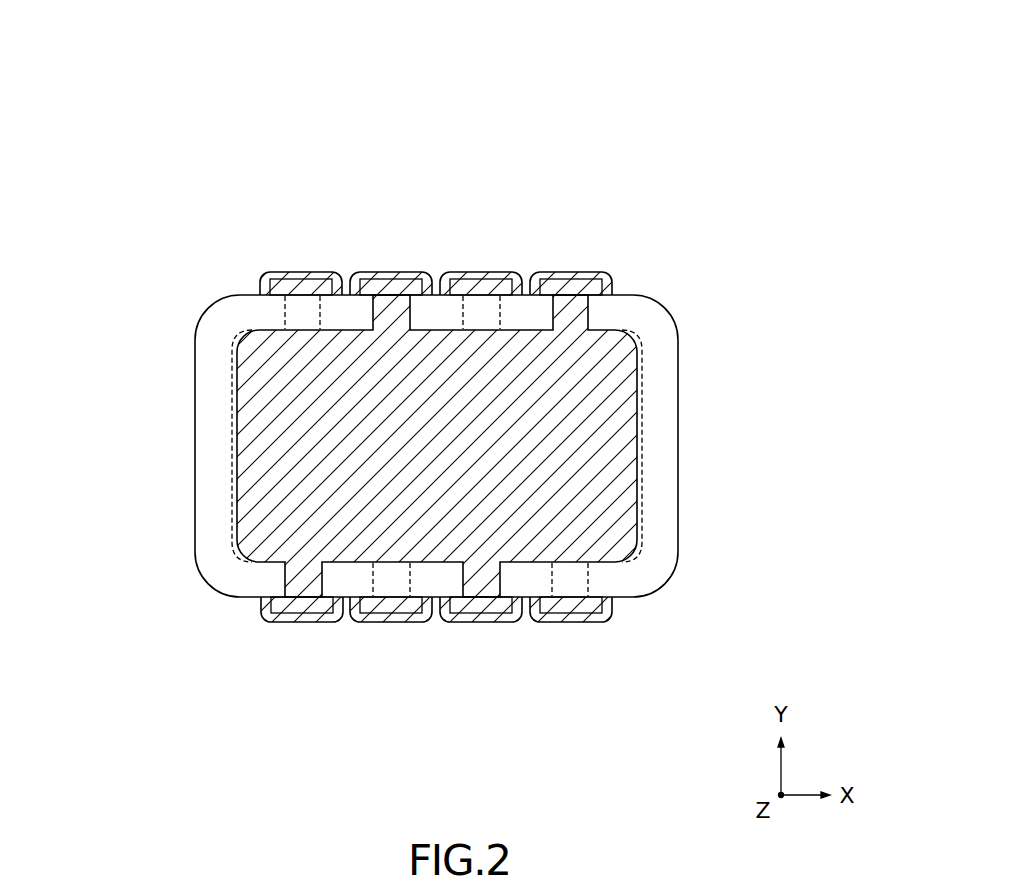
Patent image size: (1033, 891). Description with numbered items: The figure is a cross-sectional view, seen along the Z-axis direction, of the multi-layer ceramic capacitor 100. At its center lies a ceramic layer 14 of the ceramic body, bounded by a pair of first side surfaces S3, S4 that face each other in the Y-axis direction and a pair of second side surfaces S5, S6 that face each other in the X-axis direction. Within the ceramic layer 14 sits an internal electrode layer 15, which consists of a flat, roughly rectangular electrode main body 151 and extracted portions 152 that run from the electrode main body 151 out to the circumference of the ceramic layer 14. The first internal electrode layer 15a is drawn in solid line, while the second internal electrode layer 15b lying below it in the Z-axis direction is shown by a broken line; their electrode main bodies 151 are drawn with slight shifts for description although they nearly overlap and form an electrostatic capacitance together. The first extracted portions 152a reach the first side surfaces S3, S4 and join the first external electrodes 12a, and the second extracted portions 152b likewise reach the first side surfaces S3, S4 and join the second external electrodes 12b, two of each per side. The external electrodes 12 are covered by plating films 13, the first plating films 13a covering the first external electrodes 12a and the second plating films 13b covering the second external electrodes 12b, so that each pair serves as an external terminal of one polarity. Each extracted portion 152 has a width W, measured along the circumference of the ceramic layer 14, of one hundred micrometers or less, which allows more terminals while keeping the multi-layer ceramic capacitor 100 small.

The multi-layer ceramic capacitor 100 is at (683, 108).
The ceramic layer 14 is at (668, 490).
The electrode main body 151 is at (233, 375).
The extracted portion 152 is at (452, 455).
The first extracted portion 152a is at (592, 300).
The second extracted portion 152b is at (283, 308).
The internal electrode layer 15 is at (433, 446).
The first internal electrode layer 15a is at (642, 443).
The second internal electrode layer 15b is at (228, 462).
The external electrode 12 is at (494, 452).
The first external electrode 12a is at (545, 672).
The second external electrode 12b is at (630, 653).
The plating film 13 is at (494, 452).
The first plating film 13a is at (310, 717).
The second plating film 13b is at (590, 728).
The first side surface S3 is at (238, 598).
The first side surface S4 is at (625, 295).
The second side surface S5 is at (195, 412).
The second side surface S6 is at (682, 527).
The width W is at (500, 598).